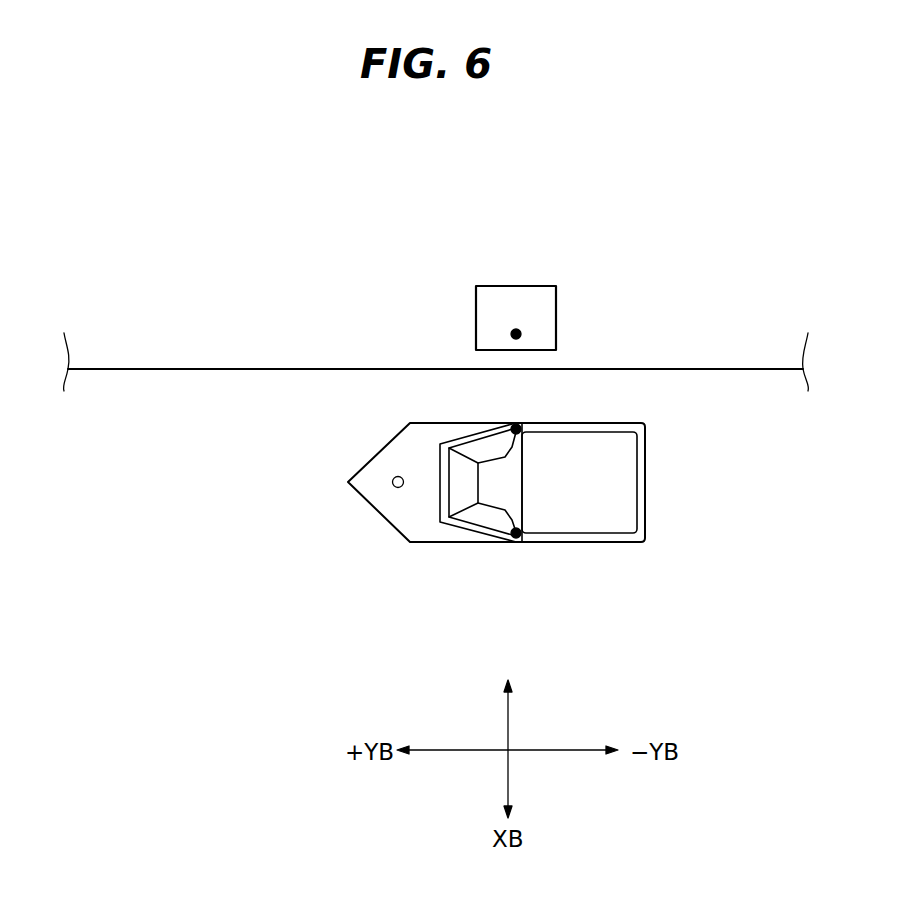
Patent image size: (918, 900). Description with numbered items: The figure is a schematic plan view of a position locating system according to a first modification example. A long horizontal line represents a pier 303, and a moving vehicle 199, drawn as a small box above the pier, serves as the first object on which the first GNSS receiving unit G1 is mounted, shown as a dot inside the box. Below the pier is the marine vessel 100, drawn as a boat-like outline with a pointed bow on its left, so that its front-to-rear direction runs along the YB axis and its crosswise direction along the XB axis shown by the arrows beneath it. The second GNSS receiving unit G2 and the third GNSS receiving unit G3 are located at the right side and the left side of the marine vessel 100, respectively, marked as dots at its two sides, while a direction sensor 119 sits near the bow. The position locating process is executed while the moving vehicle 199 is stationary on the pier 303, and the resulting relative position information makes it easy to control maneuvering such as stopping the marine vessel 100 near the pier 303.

The marine vessel 100 is at (650, 546).
The direction sensor 119 is at (400, 488).
The moving vehicle 199 is at (476, 296).
The pier 303 is at (140, 362).
The first GNSS receiving unit G1 is at (523, 332).
The second GNSS receiving unit G2 is at (517, 425).
The third GNSS receiving unit G3 is at (516, 542).